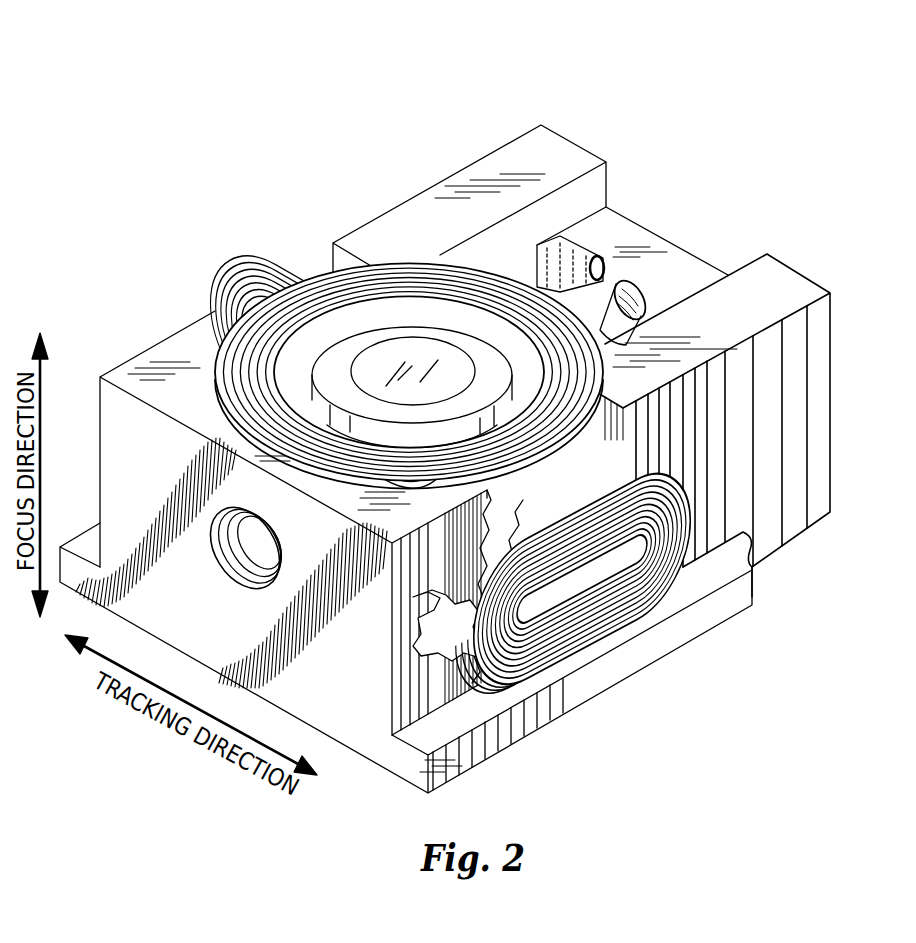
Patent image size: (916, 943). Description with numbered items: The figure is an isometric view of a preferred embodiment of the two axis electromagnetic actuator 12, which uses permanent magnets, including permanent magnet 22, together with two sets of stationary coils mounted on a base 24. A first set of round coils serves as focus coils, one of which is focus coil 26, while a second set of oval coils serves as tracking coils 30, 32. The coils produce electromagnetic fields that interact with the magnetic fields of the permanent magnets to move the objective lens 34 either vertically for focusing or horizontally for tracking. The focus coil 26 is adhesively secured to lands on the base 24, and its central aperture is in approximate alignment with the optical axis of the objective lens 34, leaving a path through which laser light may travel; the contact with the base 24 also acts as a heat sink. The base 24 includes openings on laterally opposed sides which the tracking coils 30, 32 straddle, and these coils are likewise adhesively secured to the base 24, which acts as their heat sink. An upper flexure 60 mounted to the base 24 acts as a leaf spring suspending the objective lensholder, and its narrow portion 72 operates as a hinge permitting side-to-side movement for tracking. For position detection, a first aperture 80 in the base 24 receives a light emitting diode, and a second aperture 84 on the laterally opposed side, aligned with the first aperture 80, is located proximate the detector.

The actuator 12 is at (622, 104).
The permanent magnet 22 is at (299, 523).
The base 24 is at (825, 394).
The focus coil 26 is at (392, 270).
The tracking coil 30 is at (225, 295).
The tracking coil 32 is at (690, 578).
The objective lens 34 is at (375, 358).
The upper flexure 60 is at (683, 267).
The narrow portion 72 is at (650, 310).
The first aperture 80 is at (592, 257).
The second aperture 84 is at (240, 578).